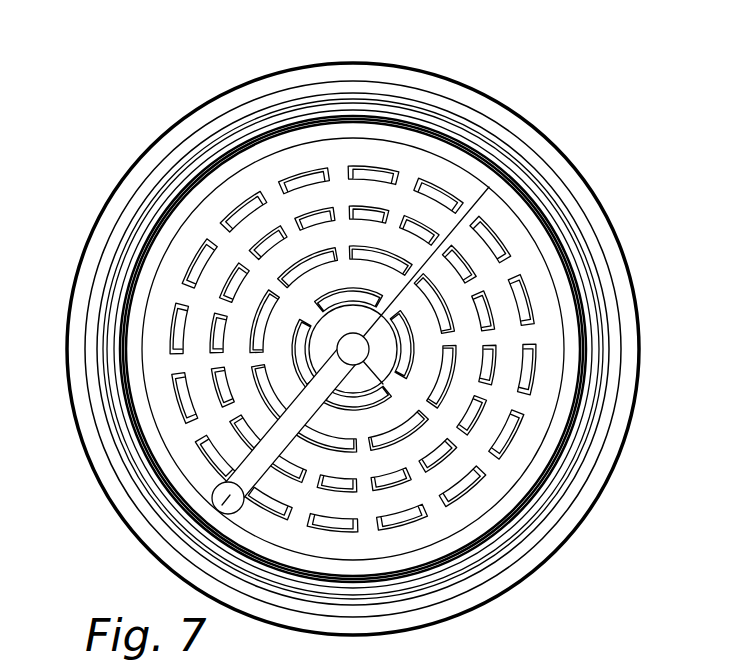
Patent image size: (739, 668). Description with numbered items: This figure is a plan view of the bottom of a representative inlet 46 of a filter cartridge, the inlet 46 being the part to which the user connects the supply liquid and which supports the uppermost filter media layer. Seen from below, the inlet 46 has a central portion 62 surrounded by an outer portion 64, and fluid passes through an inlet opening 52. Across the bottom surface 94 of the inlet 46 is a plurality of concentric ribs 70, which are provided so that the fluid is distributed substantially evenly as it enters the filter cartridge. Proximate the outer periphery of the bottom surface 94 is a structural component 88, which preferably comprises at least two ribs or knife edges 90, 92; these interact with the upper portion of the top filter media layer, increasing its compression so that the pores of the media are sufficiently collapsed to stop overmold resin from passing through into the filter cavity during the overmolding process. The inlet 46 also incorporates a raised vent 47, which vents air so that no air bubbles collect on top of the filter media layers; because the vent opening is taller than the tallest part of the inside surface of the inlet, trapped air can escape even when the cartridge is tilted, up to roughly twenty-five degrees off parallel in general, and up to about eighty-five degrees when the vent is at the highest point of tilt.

The inlet 46 is at (68, 196).
The raised vent 47 is at (214, 508).
The inlet opening 52 is at (337, 284).
The central portion 62 is at (396, 349).
The outer portion 64 is at (572, 145).
The concentric ribs 70 is at (362, 257).
The structural component 88 is at (428, 120).
The rib/knife edge 90 is at (578, 225).
The rib/knife edge 92 is at (542, 203).
The bottom surface 94 is at (612, 452).